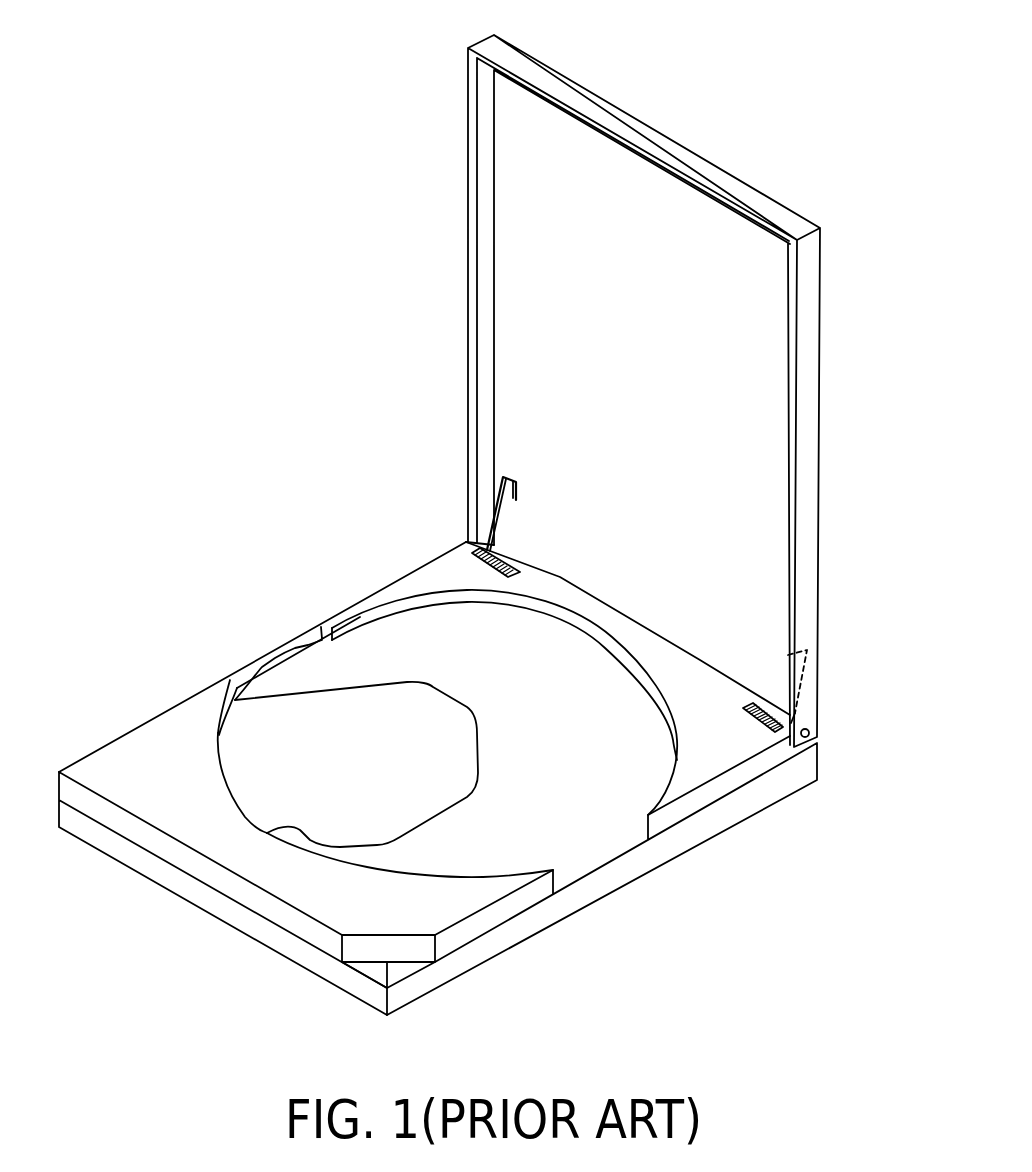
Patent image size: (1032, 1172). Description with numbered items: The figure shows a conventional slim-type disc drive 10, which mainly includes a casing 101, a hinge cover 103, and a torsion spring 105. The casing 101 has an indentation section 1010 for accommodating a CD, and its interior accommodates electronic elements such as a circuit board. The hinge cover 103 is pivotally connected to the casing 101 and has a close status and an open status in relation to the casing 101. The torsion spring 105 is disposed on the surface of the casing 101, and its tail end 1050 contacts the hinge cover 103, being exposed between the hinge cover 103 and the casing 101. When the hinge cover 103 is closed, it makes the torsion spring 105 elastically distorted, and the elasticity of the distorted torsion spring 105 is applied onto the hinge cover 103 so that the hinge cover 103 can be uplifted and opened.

The slim-type disc drive 10 is at (479, 525).
The casing 101 is at (688, 807).
The hinge cover 103 is at (807, 380).
The torsion spring 105 is at (497, 550).
The indentation section 1010 is at (400, 635).
The tail end 1050 is at (504, 477).